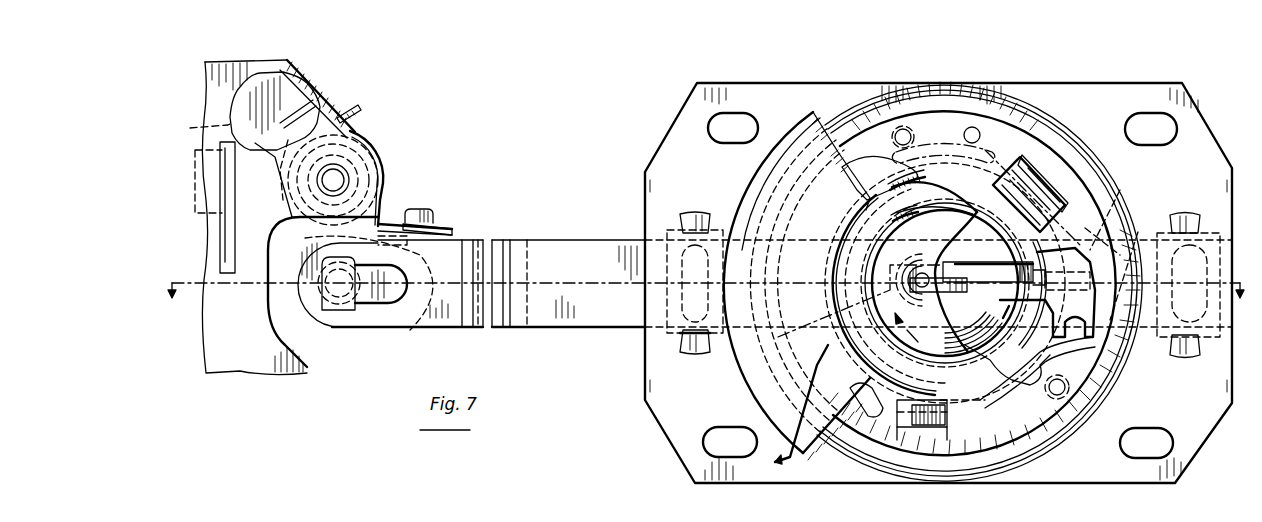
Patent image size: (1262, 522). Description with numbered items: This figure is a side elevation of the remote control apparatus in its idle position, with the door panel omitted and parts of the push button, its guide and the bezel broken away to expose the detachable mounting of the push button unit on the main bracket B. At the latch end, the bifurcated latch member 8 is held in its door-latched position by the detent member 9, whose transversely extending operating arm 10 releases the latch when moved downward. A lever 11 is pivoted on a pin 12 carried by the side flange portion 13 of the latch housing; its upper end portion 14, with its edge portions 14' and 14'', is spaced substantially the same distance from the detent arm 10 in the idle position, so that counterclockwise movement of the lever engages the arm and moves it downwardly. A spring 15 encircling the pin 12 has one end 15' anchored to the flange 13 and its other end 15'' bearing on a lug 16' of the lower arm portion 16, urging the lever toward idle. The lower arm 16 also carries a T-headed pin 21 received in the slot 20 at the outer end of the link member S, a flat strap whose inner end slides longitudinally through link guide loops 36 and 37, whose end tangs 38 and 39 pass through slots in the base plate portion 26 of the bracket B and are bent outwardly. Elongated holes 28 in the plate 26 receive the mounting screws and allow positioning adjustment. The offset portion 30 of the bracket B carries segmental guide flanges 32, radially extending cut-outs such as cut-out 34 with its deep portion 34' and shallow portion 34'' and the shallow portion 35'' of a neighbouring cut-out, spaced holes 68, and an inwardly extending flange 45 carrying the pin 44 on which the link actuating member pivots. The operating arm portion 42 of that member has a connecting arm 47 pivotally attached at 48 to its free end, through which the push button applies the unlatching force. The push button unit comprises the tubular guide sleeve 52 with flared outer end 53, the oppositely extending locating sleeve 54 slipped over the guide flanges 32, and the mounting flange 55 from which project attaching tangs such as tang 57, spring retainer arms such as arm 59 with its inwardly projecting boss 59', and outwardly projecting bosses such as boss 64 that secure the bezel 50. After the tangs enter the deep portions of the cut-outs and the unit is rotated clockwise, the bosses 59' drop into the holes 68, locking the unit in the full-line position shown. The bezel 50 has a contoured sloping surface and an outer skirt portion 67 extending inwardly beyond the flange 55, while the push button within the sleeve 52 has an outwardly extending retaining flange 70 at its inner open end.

The latch member 8 is at (705, 305).
The detent member 9 is at (902, 338).
The operating arm 10 is at (225, 218).
The lever 11 is at (383, 215).
The pin 12 is at (345, 168).
The side flange portion 13 is at (256, 362).
The upper end portion 14 is at (241, 138).
The inclined face 14' is at (317, 92).
The advance upper edge portion 14'' is at (196, 126).
The spring 15 is at (390, 178).
The spring end 15' is at (370, 98).
The spring end 15'' is at (458, 220).
The lower arm portion 16 is at (350, 292).
The lug 16' is at (432, 216).
The slot 20 is at (390, 295).
The T-headed pin 21 is at (340, 300).
The base plate portion 26 is at (762, 100).
The elongated holes 28 is at (712, 128).
The offset portion 30 is at (880, 140).
The guide flanges 32 is at (978, 190).
The cut out portion 34 is at (1032, 197).
The deep portion 34' is at (1058, 160).
The shallow portion 34'' is at (1075, 186).
The shallow portion 35'' is at (912, 469).
The link guide loop 36 is at (668, 295).
The link guide loop 37 is at (1225, 262).
The end tang 38 is at (686, 218).
The end tang 39 is at (1188, 215).
The arm portion 42 is at (1010, 273).
The pin 44 is at (1125, 250).
The flange 45 is at (1112, 202).
The connecting arm 47 is at (950, 292).
The pivotal attachment 48 is at (950, 258).
The bezel 50 is at (740, 190).
The push button guide sleeve 52 is at (910, 208).
The flared outer end 53 is at (757, 395).
The locating sleeve 54 is at (905, 178).
The mounting flange 55 is at (988, 430).
The attaching tang 57 is at (938, 428).
The spring retainer arm 59 is at (1037, 408).
The boss 59' is at (1074, 410).
The boss 64 is at (865, 418).
The outer skirt portion 67 is at (752, 350).
The holes 68 is at (975, 128).
The retaining flange 70 is at (976, 220).
The main bracket B is at (1192, 108).
The link member S is at (566, 244).